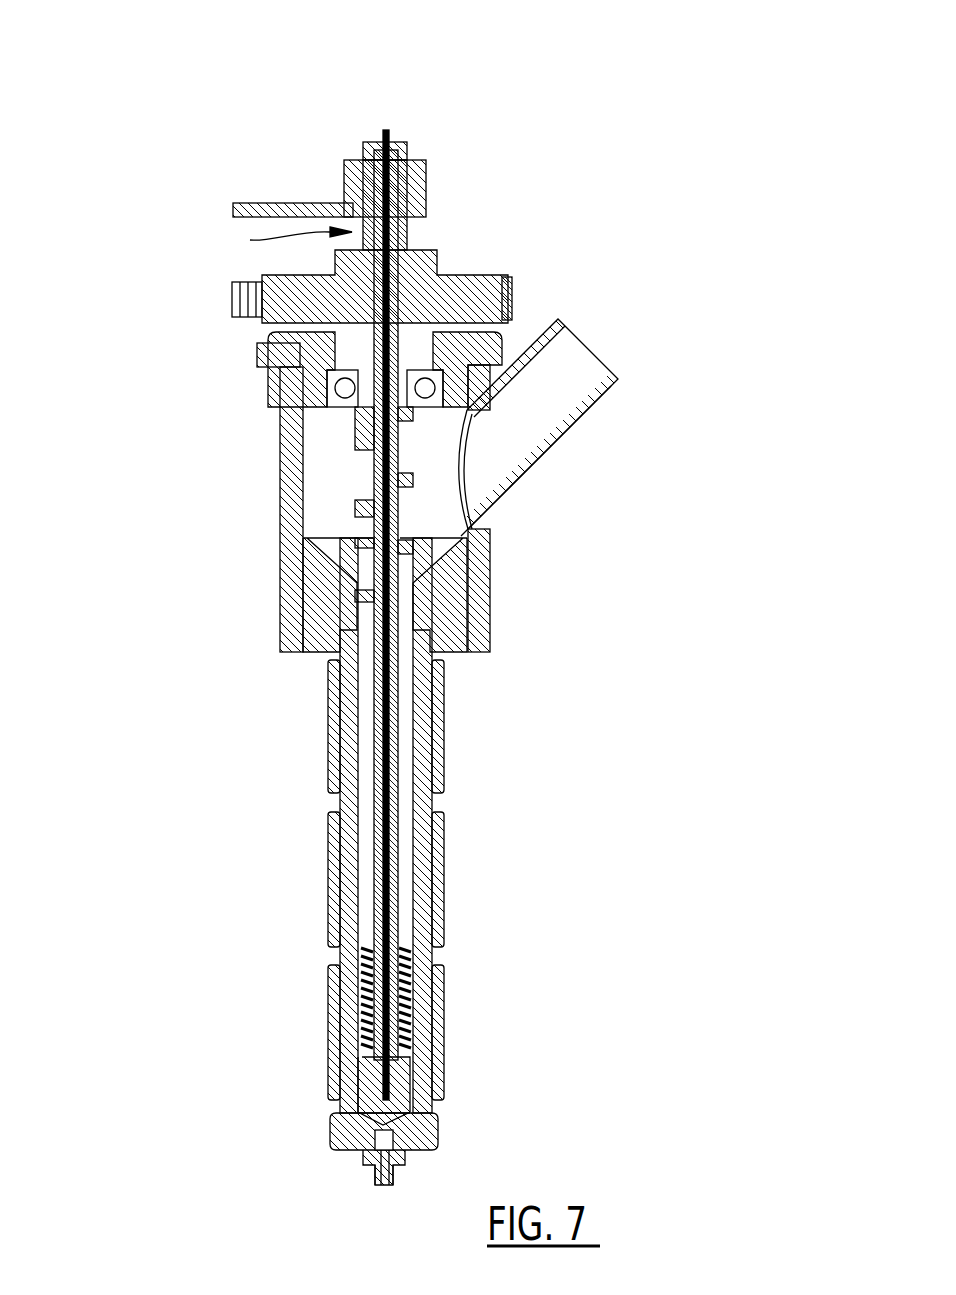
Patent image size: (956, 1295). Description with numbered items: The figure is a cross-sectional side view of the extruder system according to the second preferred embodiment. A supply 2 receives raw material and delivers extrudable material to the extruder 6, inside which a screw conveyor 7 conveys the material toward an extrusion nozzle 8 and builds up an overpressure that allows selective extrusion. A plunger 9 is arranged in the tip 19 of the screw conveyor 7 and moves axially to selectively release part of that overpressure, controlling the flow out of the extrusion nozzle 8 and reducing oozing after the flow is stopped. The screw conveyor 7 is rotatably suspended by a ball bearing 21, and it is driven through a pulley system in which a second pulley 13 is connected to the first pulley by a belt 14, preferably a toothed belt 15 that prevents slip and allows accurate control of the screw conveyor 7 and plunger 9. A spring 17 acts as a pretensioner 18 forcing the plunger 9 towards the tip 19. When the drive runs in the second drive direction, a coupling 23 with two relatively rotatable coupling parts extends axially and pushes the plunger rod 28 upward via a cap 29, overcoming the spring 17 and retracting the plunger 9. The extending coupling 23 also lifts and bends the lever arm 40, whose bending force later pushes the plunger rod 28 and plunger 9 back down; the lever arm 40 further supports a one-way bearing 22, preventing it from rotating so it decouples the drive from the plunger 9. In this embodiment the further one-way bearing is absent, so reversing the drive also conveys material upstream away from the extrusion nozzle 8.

The supply 2 is at (548, 378).
The extruder 6 is at (422, 900).
The screw conveyor 7 is at (410, 802).
The extrusion nozzle 8 is at (388, 1172).
The plunger 9 is at (387, 1108).
The second pulley 13 is at (470, 285).
The belt 14 is at (367, 291).
The toothed belt 15 is at (240, 292).
The spring 17 is at (469, 998).
The pretensioner 18 is at (405, 1015).
The tip 19 is at (417, 1132).
The ball bearing 21 is at (345, 400).
The one-way bearing 22 is at (415, 183).
The coupling 23 is at (283, 240).
The plunger rod 28 is at (386, 133).
The cap 29 is at (398, 152).
The lever arm 40 is at (253, 217).